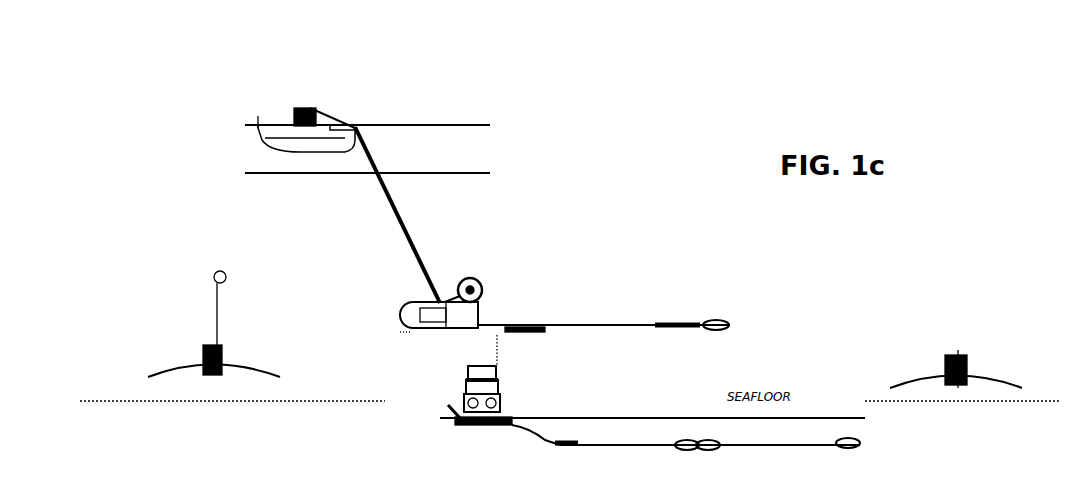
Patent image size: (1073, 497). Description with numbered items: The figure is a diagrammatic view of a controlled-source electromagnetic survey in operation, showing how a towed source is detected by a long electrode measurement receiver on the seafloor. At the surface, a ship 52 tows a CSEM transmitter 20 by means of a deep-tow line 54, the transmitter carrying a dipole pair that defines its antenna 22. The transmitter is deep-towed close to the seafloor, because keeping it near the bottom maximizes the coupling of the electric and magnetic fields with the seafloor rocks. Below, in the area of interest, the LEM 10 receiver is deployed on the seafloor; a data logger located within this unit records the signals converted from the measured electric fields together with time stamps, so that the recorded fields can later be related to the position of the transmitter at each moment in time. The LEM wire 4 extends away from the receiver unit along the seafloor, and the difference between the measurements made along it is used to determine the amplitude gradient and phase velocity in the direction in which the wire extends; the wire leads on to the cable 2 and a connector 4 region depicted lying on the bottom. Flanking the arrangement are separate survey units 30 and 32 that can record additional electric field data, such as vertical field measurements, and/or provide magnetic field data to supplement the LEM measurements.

The cable on seafloor 2 is at (660, 434).
The LEM wire 4 is at (575, 445).
The LEM receiver 10 is at (468, 385).
The CSEM transmitter 20 is at (482, 286).
The antenna 22 is at (612, 322).
The survey unit 30 is at (952, 358).
The anchor with buoy line 32 is at (207, 350).
The ship 52 is at (313, 112).
The deep-tow line 54 is at (396, 234).